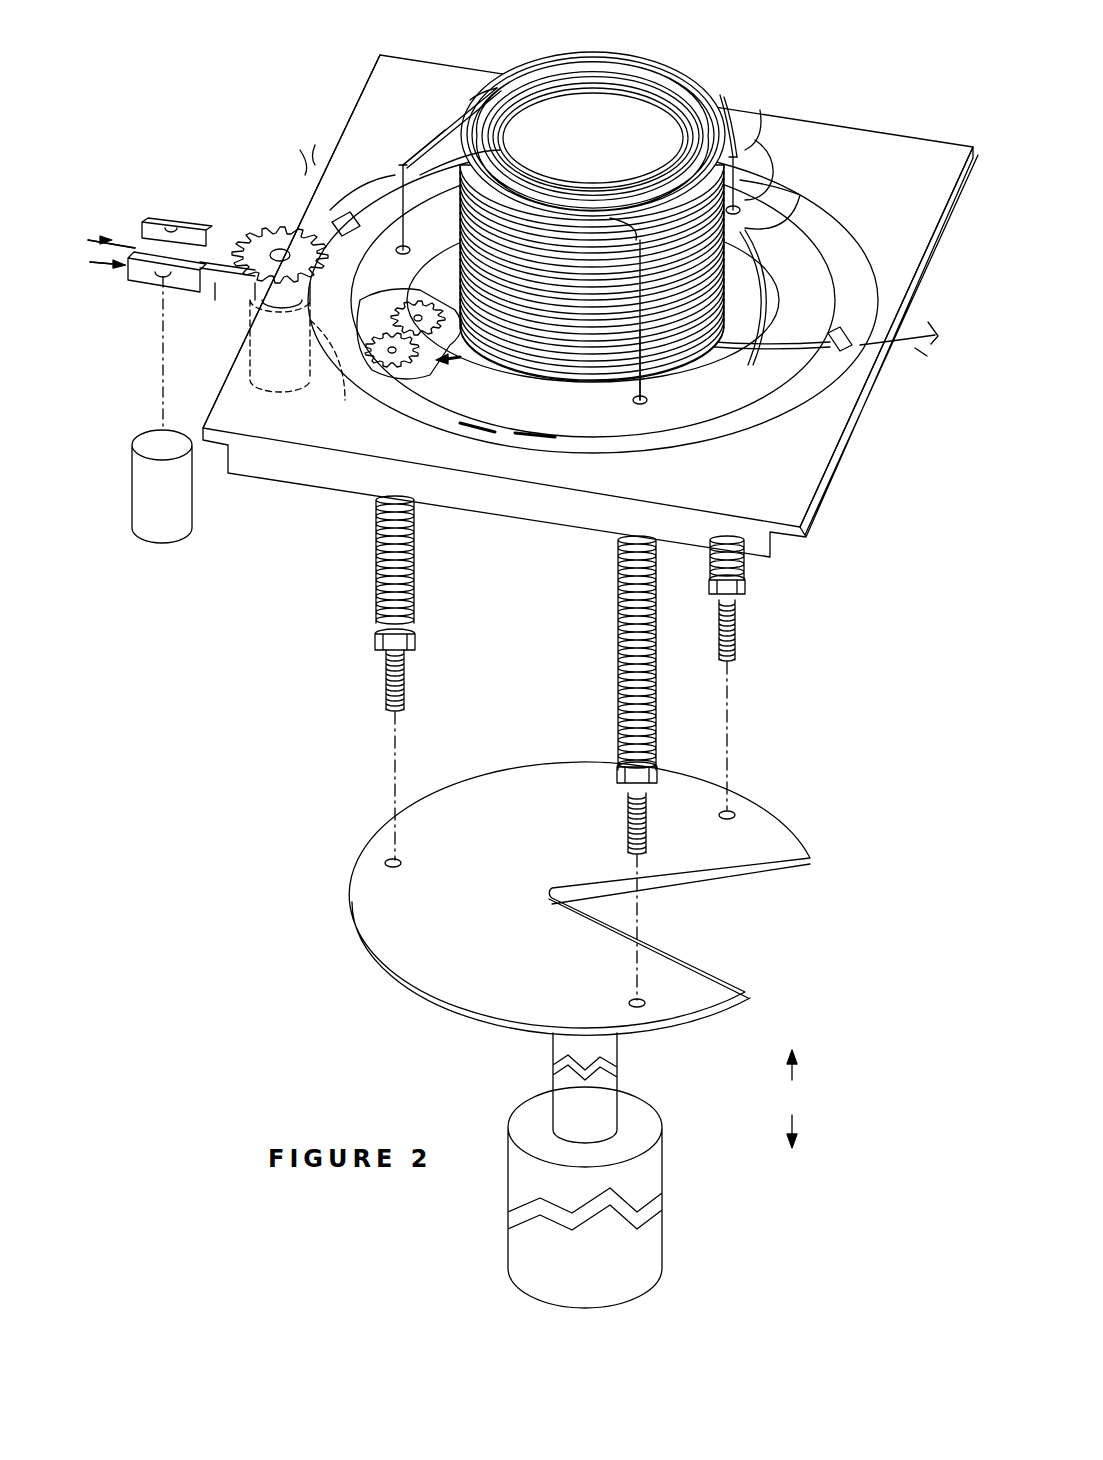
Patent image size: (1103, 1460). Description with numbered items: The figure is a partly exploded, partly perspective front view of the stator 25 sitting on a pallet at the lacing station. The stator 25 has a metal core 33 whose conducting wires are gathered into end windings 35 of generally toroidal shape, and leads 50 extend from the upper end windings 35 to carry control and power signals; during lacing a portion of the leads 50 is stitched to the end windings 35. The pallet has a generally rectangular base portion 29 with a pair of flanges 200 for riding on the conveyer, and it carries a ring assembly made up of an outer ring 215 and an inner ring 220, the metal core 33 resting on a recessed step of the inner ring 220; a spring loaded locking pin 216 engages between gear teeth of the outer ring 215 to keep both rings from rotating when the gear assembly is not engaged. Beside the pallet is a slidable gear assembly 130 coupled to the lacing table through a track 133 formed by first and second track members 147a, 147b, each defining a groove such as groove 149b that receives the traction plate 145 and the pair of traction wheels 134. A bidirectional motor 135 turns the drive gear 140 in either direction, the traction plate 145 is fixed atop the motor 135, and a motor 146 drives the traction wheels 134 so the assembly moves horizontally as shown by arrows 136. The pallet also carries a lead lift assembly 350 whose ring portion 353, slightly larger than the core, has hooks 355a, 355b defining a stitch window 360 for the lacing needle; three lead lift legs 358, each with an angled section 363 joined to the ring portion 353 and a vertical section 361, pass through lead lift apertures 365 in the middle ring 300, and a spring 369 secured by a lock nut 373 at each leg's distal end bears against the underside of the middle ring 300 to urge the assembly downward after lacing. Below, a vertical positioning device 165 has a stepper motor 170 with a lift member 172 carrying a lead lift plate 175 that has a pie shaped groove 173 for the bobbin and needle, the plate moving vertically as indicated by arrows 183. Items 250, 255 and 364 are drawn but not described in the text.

The stator 25 is at (604, 194).
The base portion 29 is at (370, 103).
The metal core 33 is at (645, 330).
The end windings 35 is at (570, 75).
The leads 50 is at (858, 356).
The slidable gear assembly 130 is at (210, 225).
The track 133 is at (144, 206).
The traction wheels 134 is at (218, 296).
The bidirectional motor 135 is at (275, 400).
The arrows 136 is at (128, 240).
The drive gear 140 is at (270, 242).
The traction plate 145 is at (215, 245).
The motor 146 is at (172, 540).
The first track member 147a is at (165, 222).
The second track member 147b is at (145, 298).
The groove 149b is at (95, 262).
The vertical positioning device 165 is at (768, 1030).
The stepper motor 170 is at (645, 1153).
The lift member 172 is at (605, 1045).
The pie shaped groove 173 is at (772, 938).
The lead lift plate 175 is at (487, 797).
The arrows 183 is at (798, 1110).
The flanges 200 is at (800, 535).
The outer ring 215 is at (700, 430).
The locking pin 216 is at (320, 355).
The inner ring 220 is at (576, 425).
The gear train 250 is at (473, 363).
The wire guide block 255 is at (836, 350).
The middle ring 300 is at (735, 378).
The lead lift assembly 350 is at (442, 86).
The ring portion 353 is at (478, 98).
The hook 355a is at (745, 150).
The hook 355b is at (748, 172).
The lead lift legs 358 is at (735, 98).
The stitch window 360 is at (798, 152).
The vertical section 361 is at (405, 256).
The angled section 363 is at (427, 150).
The front post 364 is at (636, 402).
The lead lift aperture 365 is at (405, 262).
The spring 369 is at (385, 580).
The lock nut 373 is at (378, 640).